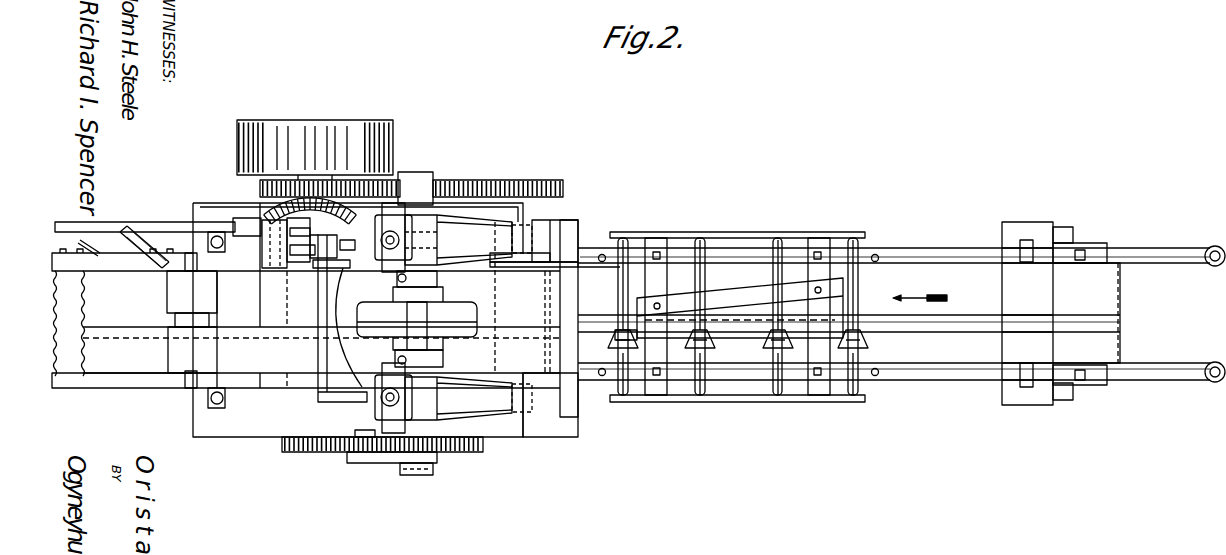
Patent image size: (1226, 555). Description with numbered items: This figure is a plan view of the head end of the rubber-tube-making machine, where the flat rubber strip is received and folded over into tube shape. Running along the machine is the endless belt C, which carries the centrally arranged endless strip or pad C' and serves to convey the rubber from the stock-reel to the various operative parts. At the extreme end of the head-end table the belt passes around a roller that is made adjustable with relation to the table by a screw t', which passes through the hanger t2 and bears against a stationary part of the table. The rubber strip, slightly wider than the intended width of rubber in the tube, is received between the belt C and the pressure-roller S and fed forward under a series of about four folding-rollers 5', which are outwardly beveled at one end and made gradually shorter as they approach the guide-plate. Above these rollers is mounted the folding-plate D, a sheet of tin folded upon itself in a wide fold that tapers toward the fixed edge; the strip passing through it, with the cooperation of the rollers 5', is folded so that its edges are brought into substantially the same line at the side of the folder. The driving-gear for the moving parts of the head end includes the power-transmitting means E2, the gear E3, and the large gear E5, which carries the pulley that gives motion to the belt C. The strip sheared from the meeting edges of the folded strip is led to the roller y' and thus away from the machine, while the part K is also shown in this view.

The roller y' is at (158, 224).
The power-transmitting means E2 is at (267, 215).
The driving-gear part E3 is at (363, 182).
The large gear E5 is at (513, 160).
The folding-plate D is at (726, 298).
The block K is at (613, 322).
The folding-rollers 5' is at (738, 317).
The pressure-roller S is at (1027, 313).
The endless belt C is at (1086, 313).
The endless strip or pad C' is at (868, 325).
The hanger t2 is at (1087, 253).
The screw t' is at (1202, 321).